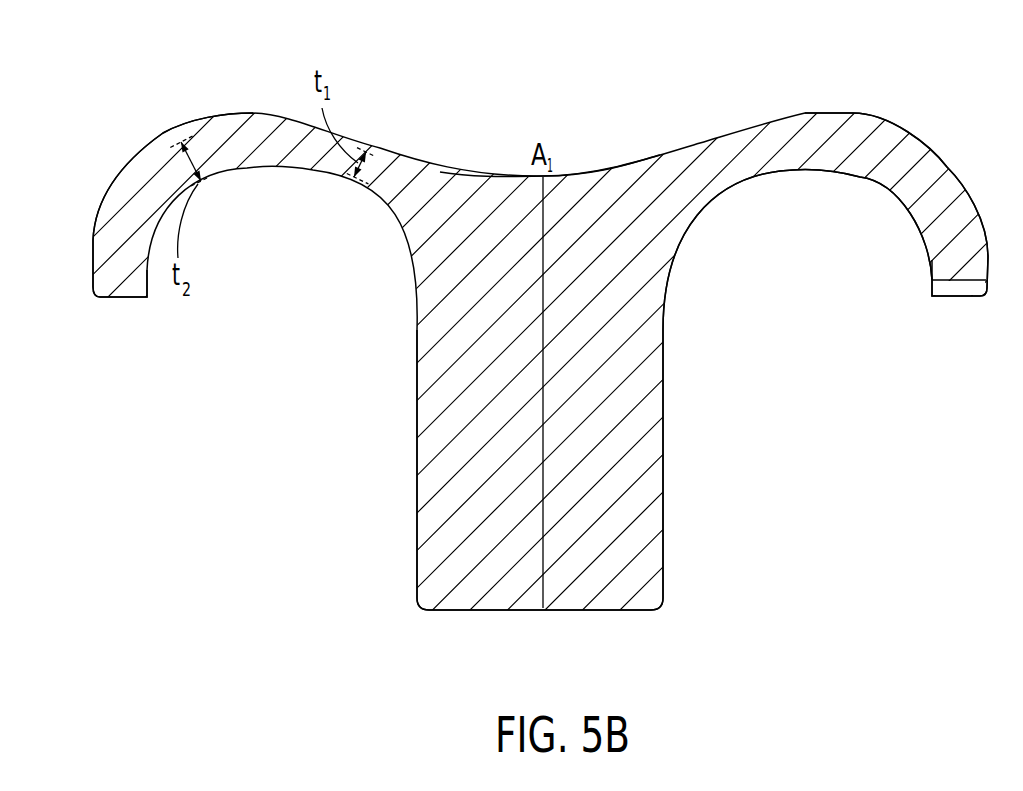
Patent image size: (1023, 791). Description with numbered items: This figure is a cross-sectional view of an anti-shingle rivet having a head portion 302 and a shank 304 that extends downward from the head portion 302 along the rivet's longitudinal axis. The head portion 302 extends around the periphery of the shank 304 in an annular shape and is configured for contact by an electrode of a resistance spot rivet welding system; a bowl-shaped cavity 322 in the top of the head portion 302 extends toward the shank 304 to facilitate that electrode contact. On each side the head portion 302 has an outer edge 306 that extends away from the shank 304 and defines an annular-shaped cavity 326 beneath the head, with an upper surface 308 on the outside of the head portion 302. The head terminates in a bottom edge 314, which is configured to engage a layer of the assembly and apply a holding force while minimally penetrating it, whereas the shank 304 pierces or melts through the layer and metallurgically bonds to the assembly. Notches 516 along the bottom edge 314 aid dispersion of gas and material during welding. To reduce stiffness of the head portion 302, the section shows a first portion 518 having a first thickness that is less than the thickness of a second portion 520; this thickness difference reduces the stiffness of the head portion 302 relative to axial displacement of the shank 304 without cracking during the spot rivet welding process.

The head portion 302 is at (254, 116).
The shank 304 is at (422, 556).
The outer edge 306 is at (93, 239).
The upper surface 308 is at (828, 113).
The bottom edge 314 is at (123, 289).
The notches 516 is at (959, 288).
The cavity 322 is at (489, 157).
The annular-shaped cavity 326 is at (826, 218).
The first portion 518 is at (368, 138).
The second portion 520 is at (190, 124).